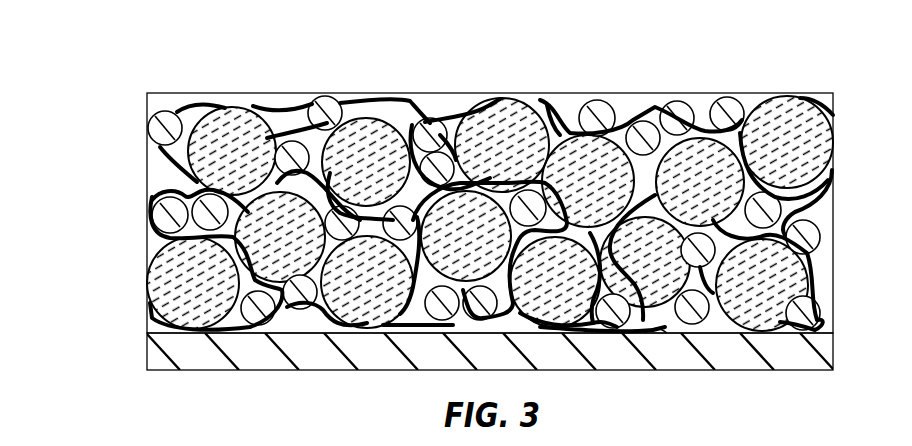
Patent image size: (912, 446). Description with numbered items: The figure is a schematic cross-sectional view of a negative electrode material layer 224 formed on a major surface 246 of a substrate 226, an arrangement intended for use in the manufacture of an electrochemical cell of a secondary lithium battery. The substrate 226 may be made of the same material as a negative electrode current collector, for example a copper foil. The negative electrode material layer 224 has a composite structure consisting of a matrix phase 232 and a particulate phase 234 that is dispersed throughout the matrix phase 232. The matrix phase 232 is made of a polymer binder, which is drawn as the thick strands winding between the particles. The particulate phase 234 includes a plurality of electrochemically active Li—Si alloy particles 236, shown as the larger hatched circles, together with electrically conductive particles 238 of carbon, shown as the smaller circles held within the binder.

The negative electrode material layer 224 is at (147, 167).
The substrate 226 is at (147, 347).
The matrix phase 232 is at (394, 94).
The particulate phase 234 is at (230, 100).
The Li—Si alloy particles 236 is at (780, 96).
The electrically conductive particles 238 is at (677, 96).
The major surface 246 is at (667, 334).